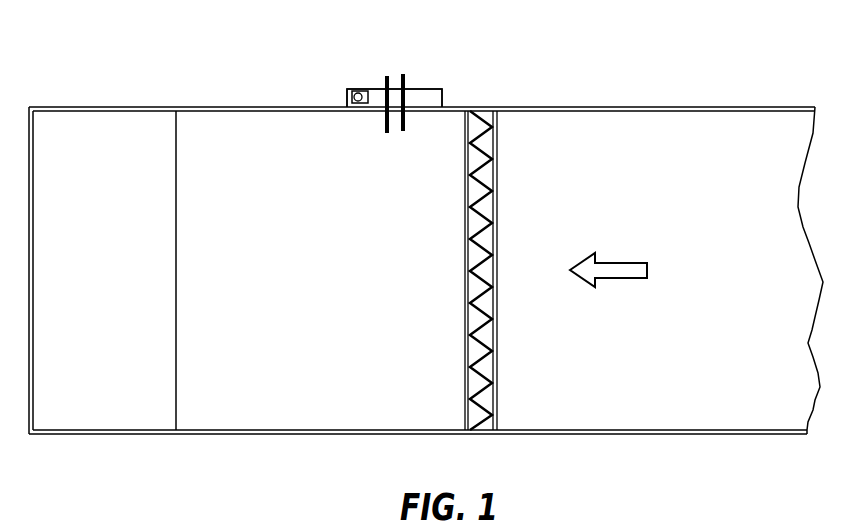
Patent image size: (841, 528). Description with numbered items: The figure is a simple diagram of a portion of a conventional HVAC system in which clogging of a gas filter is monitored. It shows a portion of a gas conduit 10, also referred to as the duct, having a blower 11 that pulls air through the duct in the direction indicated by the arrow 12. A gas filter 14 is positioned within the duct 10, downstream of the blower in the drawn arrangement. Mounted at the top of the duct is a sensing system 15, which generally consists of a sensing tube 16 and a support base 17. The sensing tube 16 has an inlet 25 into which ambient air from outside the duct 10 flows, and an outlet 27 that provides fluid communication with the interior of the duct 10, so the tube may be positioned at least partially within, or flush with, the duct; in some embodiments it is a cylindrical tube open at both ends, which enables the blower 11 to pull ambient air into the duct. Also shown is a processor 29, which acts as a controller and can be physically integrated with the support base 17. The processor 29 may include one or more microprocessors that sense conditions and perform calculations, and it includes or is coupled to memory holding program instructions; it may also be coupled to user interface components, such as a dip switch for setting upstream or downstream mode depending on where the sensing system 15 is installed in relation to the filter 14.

The gas conduit 10 is at (708, 80).
The blower 11 is at (111, 270).
The arrow 12 is at (633, 279).
The gas filter 14 is at (490, 393).
The sensing system 15 is at (452, 88).
The sensing tube 16 is at (386, 123).
The support base 17 is at (368, 89).
The inlet 25 is at (395, 80).
The outlet 27 is at (396, 137).
The processor 29 is at (352, 97).